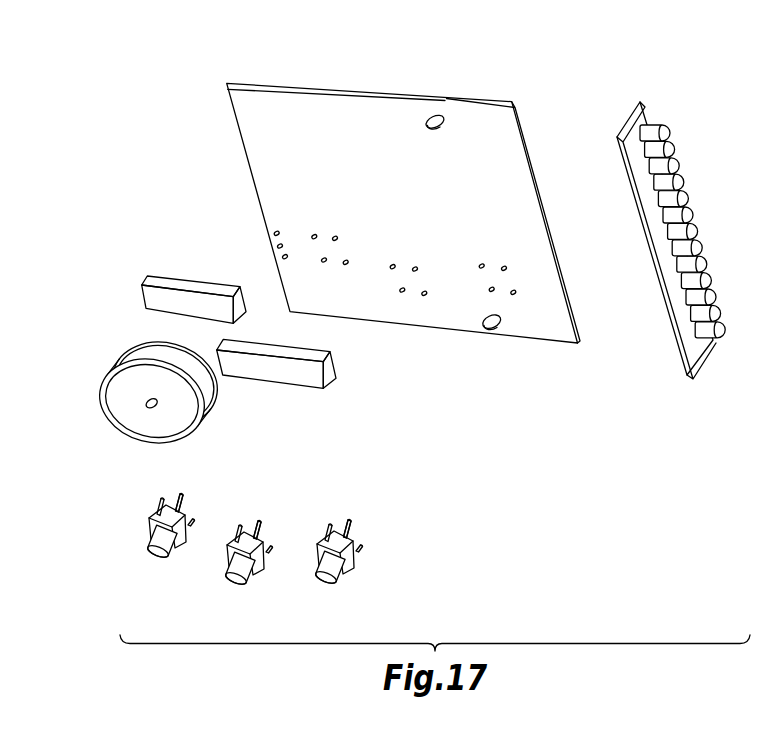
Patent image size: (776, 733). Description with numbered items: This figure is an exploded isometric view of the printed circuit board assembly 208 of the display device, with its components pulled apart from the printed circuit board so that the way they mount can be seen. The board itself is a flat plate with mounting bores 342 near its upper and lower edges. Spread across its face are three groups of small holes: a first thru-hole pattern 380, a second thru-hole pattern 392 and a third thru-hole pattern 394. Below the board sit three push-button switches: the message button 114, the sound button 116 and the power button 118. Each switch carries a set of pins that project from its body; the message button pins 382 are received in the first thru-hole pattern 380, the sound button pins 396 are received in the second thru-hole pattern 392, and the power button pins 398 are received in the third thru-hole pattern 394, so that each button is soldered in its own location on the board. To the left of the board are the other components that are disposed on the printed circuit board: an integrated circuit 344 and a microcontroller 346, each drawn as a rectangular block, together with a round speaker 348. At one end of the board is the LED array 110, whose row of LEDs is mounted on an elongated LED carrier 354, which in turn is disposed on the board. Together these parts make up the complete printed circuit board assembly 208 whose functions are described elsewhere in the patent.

The printed circuit board assembly 208 is at (400, 324).
The mounting bores 342 is at (425, 123).
The first thru-hole pattern 380 is at (336, 235).
The second thru-hole pattern 392 is at (415, 266).
The third thru-hole pattern 394 is at (504, 266).
The LED carrier 354 is at (631, 108).
The LED array 110 is at (686, 118).
The integrated circuit 344 is at (157, 305).
The microcontroller 346 is at (307, 383).
The speaker 348 is at (135, 421).
The message button 114 is at (152, 560).
The sound button 116 is at (232, 588).
The power button 118 is at (318, 588).
The message button pins 382 is at (185, 495).
The sound button pins 396 is at (265, 521).
The power button pins 398 is at (352, 521).